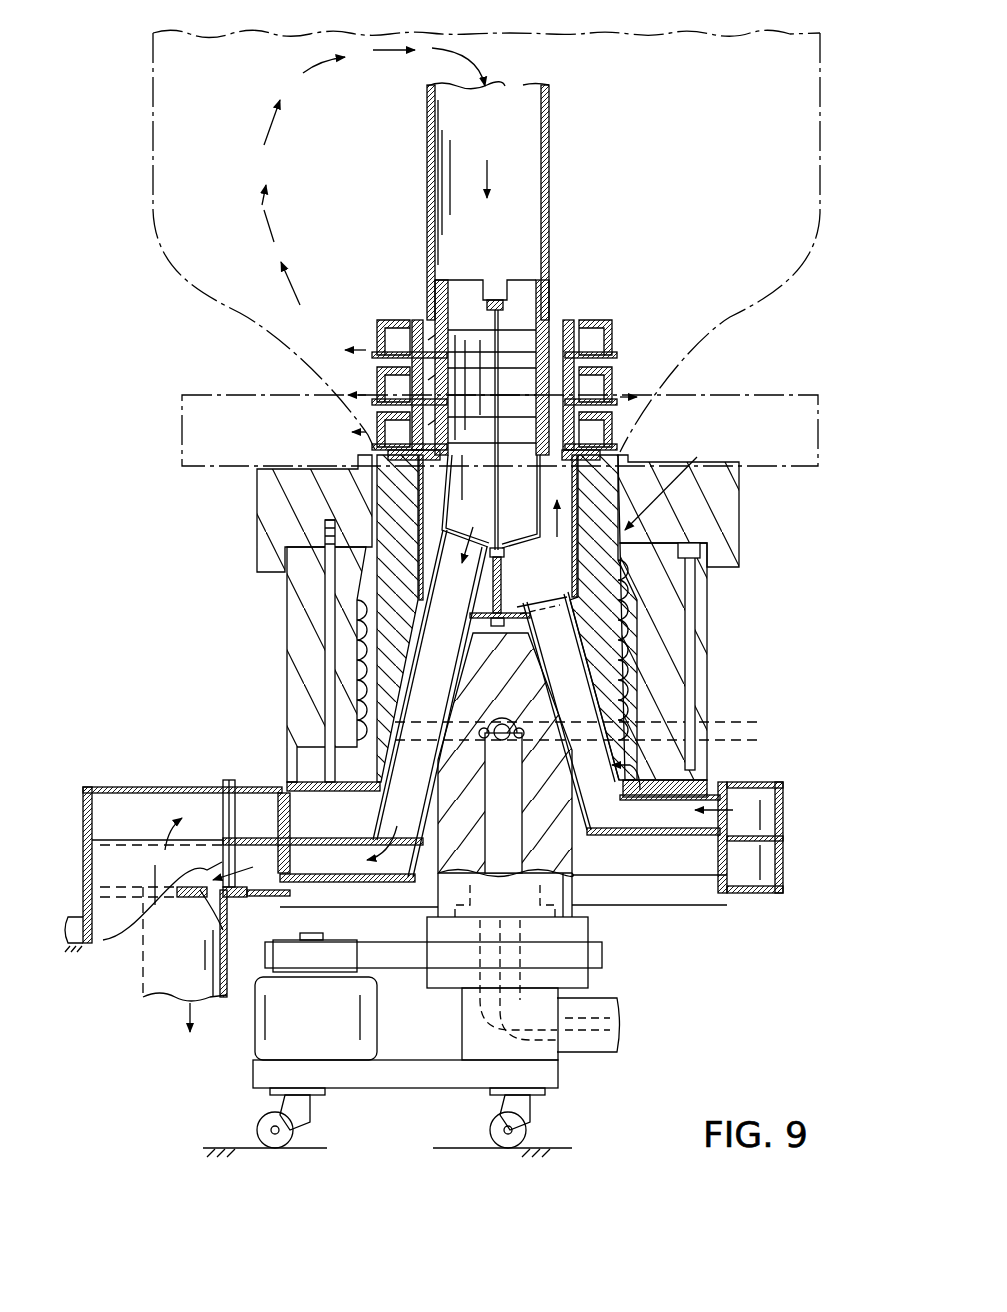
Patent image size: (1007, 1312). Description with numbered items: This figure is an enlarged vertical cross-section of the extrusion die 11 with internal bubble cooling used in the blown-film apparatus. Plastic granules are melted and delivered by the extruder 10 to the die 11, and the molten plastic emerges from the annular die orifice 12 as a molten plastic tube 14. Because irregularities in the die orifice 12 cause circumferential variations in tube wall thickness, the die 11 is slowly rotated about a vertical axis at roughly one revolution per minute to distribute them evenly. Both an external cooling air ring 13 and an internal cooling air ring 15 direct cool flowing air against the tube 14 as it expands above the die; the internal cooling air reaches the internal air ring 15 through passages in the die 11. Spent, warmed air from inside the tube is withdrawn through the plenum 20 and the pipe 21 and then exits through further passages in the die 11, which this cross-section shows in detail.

The extruder 10 is at (592, 1055).
The die 11 is at (272, 636).
The annular die orifice 12 is at (372, 470).
The external cooling air ring 13 is at (200, 395).
The molten plastic tube 14 is at (152, 145).
The internal cooling air ring 15 is at (380, 306).
The plenum 20 is at (147, 787).
The pipe 21 is at (427, 187).